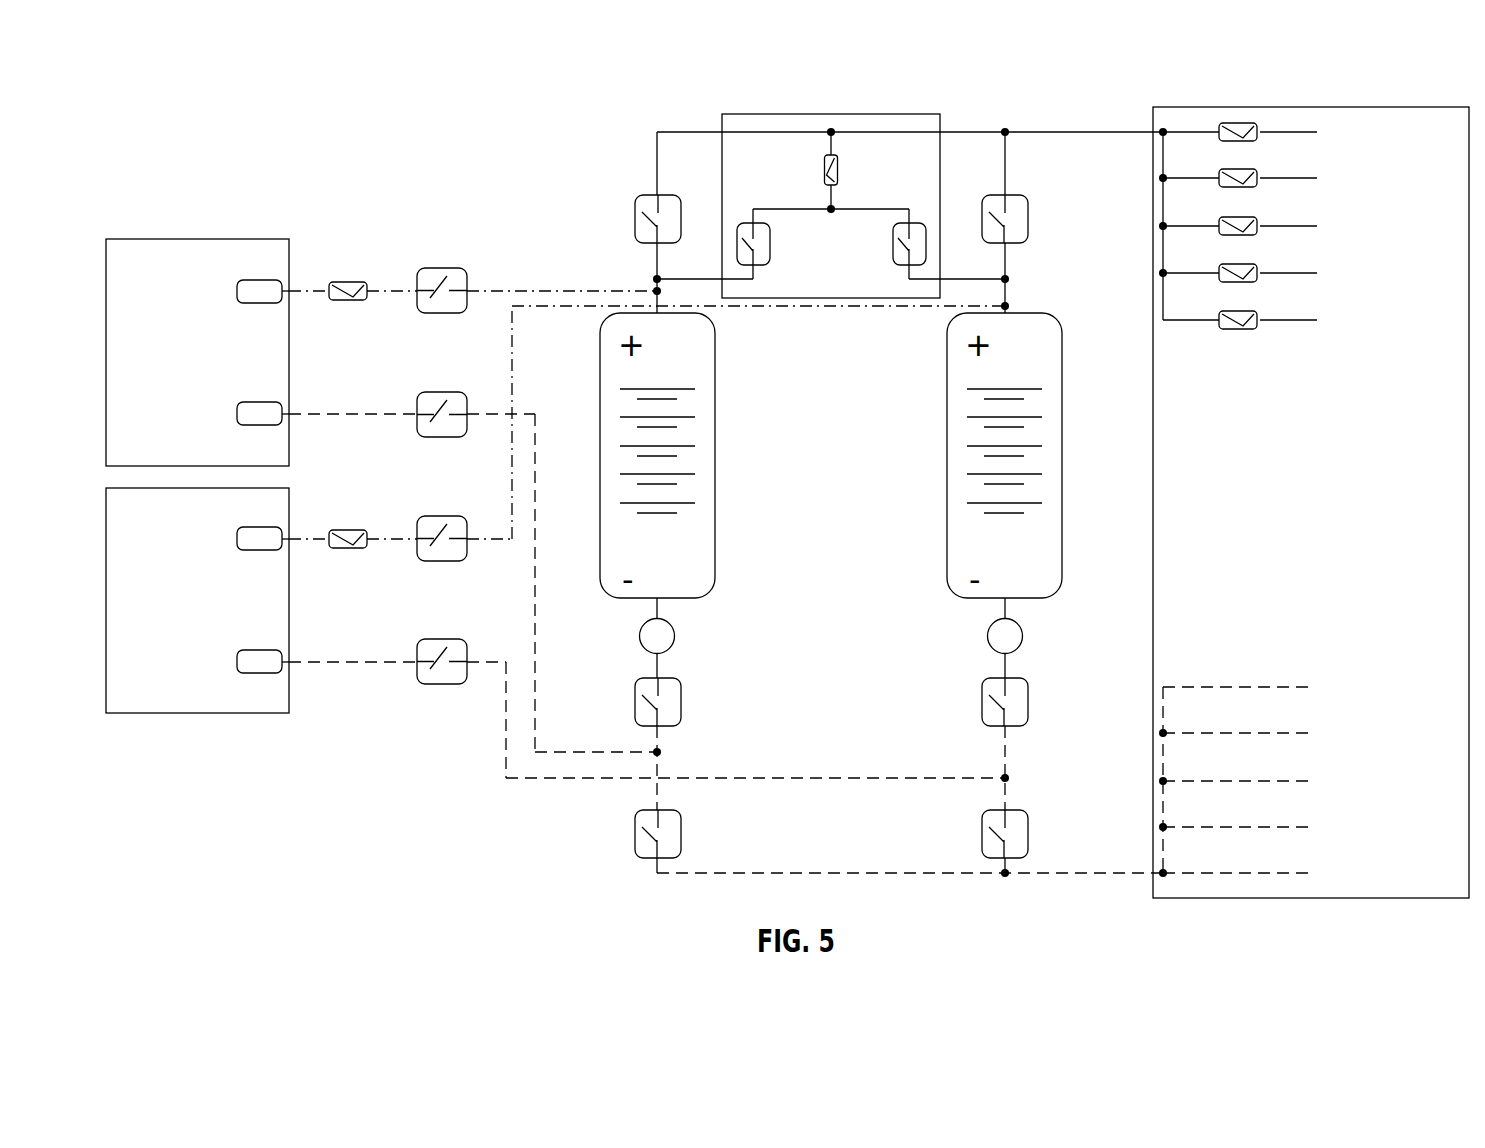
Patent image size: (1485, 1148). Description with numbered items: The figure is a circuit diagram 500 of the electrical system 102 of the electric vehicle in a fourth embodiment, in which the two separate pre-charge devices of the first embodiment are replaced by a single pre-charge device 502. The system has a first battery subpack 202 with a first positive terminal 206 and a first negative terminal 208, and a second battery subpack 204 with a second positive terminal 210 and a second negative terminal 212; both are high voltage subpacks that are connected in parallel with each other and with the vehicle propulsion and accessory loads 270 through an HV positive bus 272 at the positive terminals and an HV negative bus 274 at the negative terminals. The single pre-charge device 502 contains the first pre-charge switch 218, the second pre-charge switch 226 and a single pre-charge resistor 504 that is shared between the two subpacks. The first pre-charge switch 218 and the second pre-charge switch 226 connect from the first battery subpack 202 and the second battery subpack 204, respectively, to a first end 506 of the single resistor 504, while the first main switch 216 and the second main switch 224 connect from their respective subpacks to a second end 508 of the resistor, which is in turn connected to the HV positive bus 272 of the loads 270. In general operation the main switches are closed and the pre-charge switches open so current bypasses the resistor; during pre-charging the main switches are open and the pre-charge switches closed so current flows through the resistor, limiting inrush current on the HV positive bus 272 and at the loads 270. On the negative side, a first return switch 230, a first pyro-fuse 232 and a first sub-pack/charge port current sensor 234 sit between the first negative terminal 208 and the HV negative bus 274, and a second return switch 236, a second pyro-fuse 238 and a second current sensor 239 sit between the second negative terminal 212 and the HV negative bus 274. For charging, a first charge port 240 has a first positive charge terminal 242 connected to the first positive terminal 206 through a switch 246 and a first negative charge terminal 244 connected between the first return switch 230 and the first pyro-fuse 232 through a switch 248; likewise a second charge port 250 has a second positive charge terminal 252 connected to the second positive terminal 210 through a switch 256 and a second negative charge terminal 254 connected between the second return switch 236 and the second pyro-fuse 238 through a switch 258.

The circuit diagram 500 is at (175, 82).
The electrical system 102 is at (1130, 88).
The first battery subpack 202 is at (663, 467).
The second battery subpack 204 is at (1009, 465).
The first positive terminal 206 is at (608, 343).
The first negative terminal 208 is at (622, 578).
The second positive terminal 210 is at (955, 343).
The second negative terminal 212 is at (970, 578).
The first main switch 216 is at (650, 196).
The first pre-charge switch 218 is at (750, 227).
The second main switch 224 is at (1013, 196).
The second pre-charge switch 226 is at (907, 227).
The first return switch 230 is at (635, 834).
The first pyro-fuse 232 is at (635, 700).
The first sub-pack/charge port current sensor 234 is at (645, 650).
The second return switch 236 is at (982, 834).
The second pyro-fuse 238 is at (982, 700).
The second sub-pack/charge port current sensor 239 is at (992, 650).
The first charge port 240 is at (197, 332).
The first positive charge terminal 242 is at (258, 280).
The first negative charge terminal 244 is at (258, 428).
The switch 246 is at (417, 298).
The switch 248 is at (417, 414).
The second charge port 250 is at (197, 618).
The second positive charge terminal 252 is at (258, 527).
The second negative charge terminal 254 is at (258, 674).
The switch 256 is at (417, 546).
The switch 258 is at (417, 669).
The vehicle propulsion and accessory loads 270 is at (1391, 107).
The HV positive bus 272 is at (998, 128).
The HV negative bus 274 is at (785, 870).
The single pre-charge device 502 is at (831, 172).
The single pre-charge resistor 504 is at (822, 170).
The first end 506 is at (840, 200).
The second end 508 is at (832, 122).